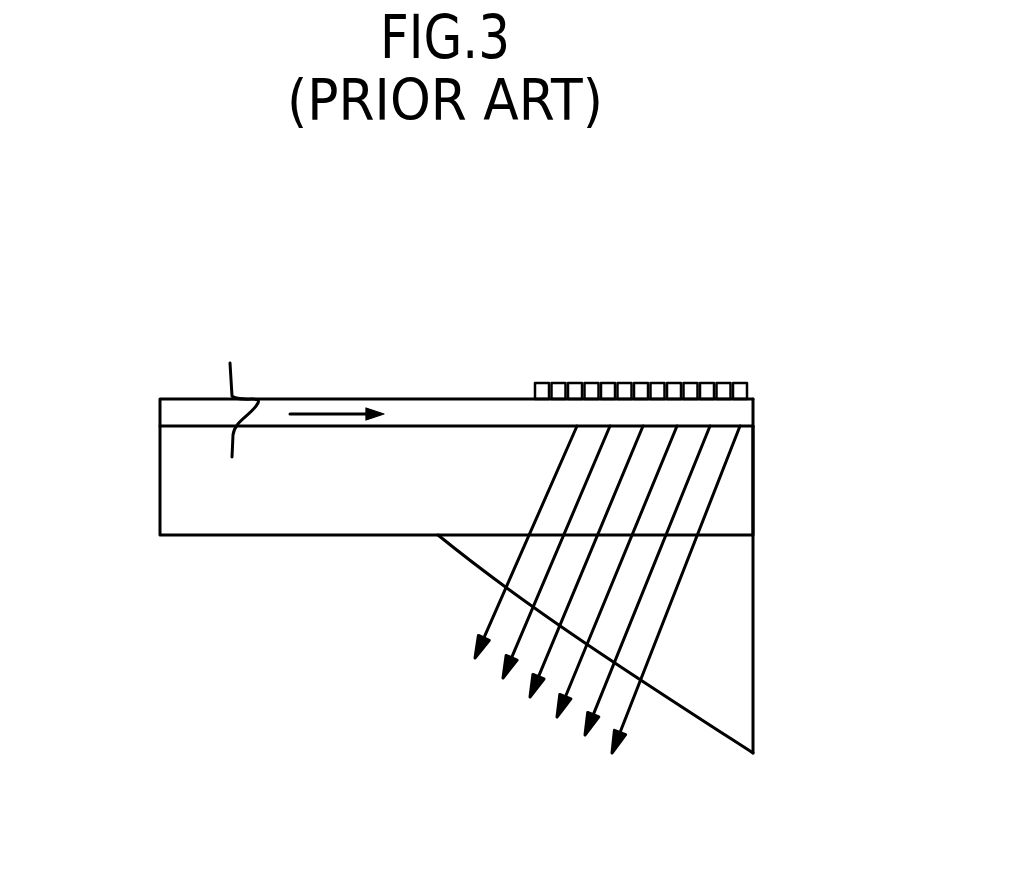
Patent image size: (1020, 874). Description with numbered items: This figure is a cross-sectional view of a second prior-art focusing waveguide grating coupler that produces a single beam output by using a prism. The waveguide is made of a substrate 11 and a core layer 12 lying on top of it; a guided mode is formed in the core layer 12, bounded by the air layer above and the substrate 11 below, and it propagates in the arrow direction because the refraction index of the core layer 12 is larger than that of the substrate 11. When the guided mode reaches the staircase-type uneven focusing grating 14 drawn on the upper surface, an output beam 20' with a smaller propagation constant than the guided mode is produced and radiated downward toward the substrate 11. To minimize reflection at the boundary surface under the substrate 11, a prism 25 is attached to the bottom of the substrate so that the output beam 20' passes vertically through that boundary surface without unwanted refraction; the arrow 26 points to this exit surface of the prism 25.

The substrate 11 is at (158, 500).
The core layer 12 is at (158, 415).
The staircase-type uneven focusing grating 14 is at (537, 388).
The output beam 20' is at (656, 589).
The prism 25 is at (743, 627).
The output surface of prism 26 is at (660, 700).